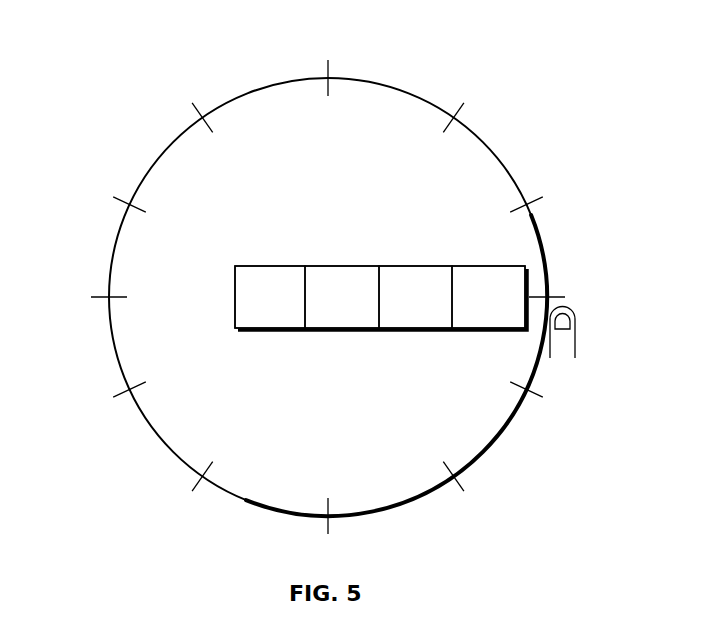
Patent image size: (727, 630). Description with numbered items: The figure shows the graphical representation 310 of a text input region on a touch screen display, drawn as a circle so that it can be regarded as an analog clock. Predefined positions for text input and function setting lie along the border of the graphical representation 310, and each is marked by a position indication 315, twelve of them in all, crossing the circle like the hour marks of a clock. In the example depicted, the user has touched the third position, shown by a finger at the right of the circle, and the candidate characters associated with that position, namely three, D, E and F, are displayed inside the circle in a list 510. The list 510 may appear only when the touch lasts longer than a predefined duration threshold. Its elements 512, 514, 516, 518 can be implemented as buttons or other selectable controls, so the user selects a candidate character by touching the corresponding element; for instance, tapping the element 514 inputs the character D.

The graphical representation of a text input region 310 is at (212, 34).
The position indications 315 is at (333, 300).
The list 510 is at (381, 300).
The element 512 is at (266, 329).
The element 514 is at (338, 329).
The element 516 is at (411, 329).
The element 518 is at (483, 329).